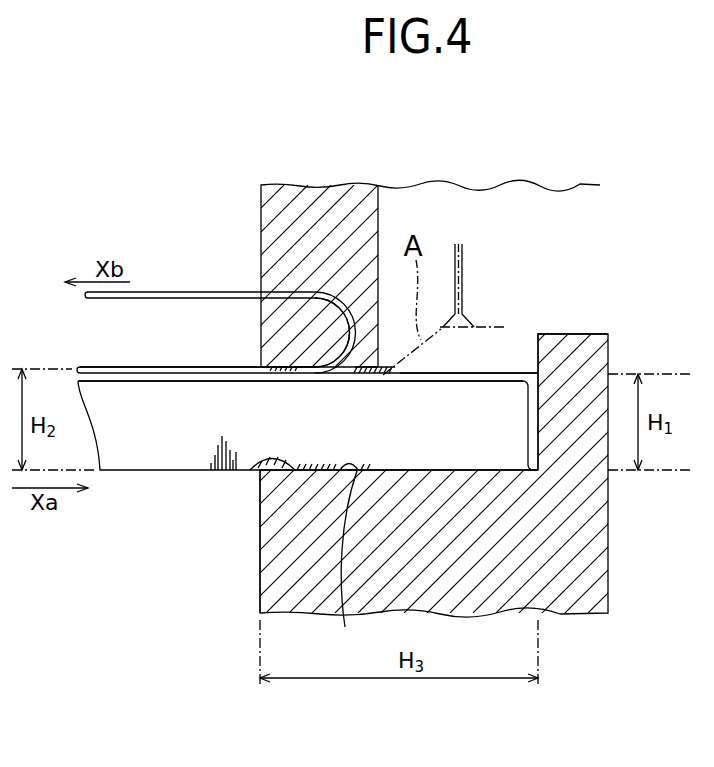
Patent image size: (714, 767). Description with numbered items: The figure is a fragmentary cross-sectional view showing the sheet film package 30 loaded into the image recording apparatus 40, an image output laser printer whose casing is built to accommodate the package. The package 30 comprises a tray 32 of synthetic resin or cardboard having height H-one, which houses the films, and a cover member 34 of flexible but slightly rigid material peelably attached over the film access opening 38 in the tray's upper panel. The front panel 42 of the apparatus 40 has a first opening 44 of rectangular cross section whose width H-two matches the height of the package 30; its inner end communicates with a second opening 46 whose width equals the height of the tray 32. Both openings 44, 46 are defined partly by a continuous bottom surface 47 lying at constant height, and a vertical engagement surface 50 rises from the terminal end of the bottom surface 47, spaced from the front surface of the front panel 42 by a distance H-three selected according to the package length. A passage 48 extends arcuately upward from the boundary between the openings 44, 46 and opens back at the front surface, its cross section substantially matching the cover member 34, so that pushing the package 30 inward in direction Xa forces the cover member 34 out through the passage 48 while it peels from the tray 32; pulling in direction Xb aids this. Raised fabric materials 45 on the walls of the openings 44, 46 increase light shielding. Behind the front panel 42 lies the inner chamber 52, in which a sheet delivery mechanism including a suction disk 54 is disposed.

The sheet film package 30 is at (136, 473).
The tray 32 is at (186, 472).
The cover member 34 is at (185, 292).
The film access opening 38 is at (463, 378).
The image recording apparatus 40 is at (257, 601).
The front panel 42 is at (260, 553).
The first opening 44 is at (285, 378).
The raised fabric materials 45 is at (342, 380).
The second opening 46 is at (352, 380).
The bottom surface 47 is at (343, 565).
The passage 48 is at (345, 333).
The vertical engagement surface 50 is at (538, 347).
The inner chamber 52 is at (446, 207).
The suction disk 54 is at (462, 292).